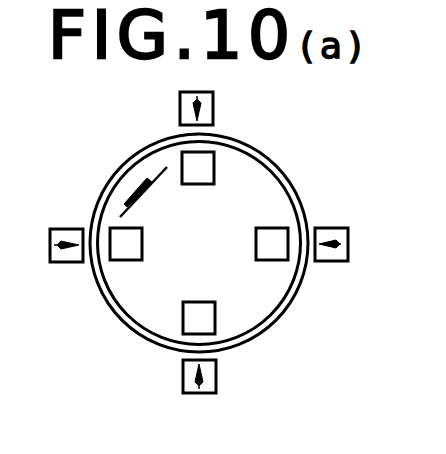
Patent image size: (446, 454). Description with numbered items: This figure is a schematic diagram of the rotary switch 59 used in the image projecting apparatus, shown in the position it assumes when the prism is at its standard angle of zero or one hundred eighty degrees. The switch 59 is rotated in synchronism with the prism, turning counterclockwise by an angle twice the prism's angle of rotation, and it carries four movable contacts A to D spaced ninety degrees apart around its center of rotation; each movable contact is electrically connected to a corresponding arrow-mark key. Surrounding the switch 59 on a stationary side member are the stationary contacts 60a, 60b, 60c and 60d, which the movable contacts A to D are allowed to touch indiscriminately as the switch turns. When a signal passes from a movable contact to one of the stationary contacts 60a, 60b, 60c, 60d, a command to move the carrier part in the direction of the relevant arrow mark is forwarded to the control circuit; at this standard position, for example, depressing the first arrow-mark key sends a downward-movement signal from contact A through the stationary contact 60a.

The rotary switch 59 is at (278, 167).
The stationary contact 60a is at (213, 108).
The stationary contact 60b is at (340, 228).
The stationary contact 60c is at (216, 377).
The stationary contact 60d is at (68, 262).